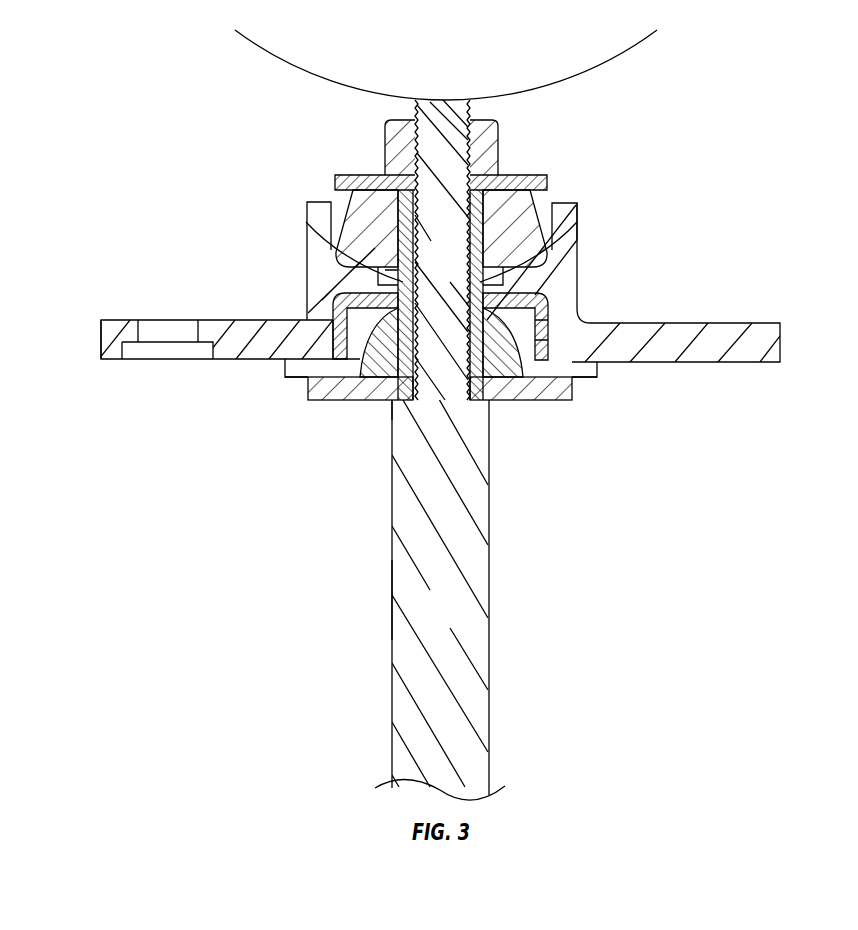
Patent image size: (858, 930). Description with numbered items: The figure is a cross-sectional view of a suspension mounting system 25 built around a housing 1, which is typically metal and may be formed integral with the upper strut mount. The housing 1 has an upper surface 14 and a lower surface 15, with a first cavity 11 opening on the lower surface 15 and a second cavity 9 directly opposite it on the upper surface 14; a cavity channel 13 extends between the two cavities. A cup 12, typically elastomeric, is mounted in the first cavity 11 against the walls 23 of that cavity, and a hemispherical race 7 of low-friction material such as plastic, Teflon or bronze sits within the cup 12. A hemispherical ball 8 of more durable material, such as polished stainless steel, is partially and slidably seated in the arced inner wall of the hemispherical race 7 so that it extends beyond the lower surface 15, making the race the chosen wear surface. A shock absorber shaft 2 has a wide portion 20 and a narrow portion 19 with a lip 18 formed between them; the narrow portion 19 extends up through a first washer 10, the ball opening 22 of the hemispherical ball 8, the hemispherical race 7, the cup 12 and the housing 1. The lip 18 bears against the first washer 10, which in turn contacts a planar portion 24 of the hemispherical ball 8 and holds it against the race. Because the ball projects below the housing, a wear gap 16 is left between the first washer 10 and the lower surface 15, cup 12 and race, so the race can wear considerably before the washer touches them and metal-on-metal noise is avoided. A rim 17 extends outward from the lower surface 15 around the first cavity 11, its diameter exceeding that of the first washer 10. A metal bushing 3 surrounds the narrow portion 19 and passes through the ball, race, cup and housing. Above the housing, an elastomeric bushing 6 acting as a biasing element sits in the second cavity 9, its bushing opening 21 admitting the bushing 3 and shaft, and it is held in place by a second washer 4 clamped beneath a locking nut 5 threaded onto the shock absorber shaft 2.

The housing 1 is at (307, 255).
The shock absorber shaft 2 is at (484, 522).
The bushing 3 is at (550, 237).
The second washer 4 is at (545, 184).
The locking nut 5 is at (493, 152).
The bushing 6 is at (488, 236).
The hemispherical race 7 is at (537, 332).
The hemispherical ball 8 is at (531, 392).
The second cavity 9 is at (345, 213).
The first washer 10 is at (562, 398).
The first cavity 11 is at (330, 332).
The cup 12 is at (547, 296).
The cavity channel 13 is at (355, 268).
The upper surface 14 is at (213, 320).
The lower surface 15 is at (103, 360).
The wear gap 16 is at (323, 367).
The rim 17 is at (592, 368).
The lip 18 is at (399, 403).
The narrow portion 19 is at (431, 272).
The wide portion 20 is at (431, 614).
The bushing opening 21 is at (378, 268).
The ball opening 22 is at (340, 399).
The walls 23 is at (321, 337).
The planar portion 24 is at (506, 396).
The suspension mounting system 25 is at (681, 231).